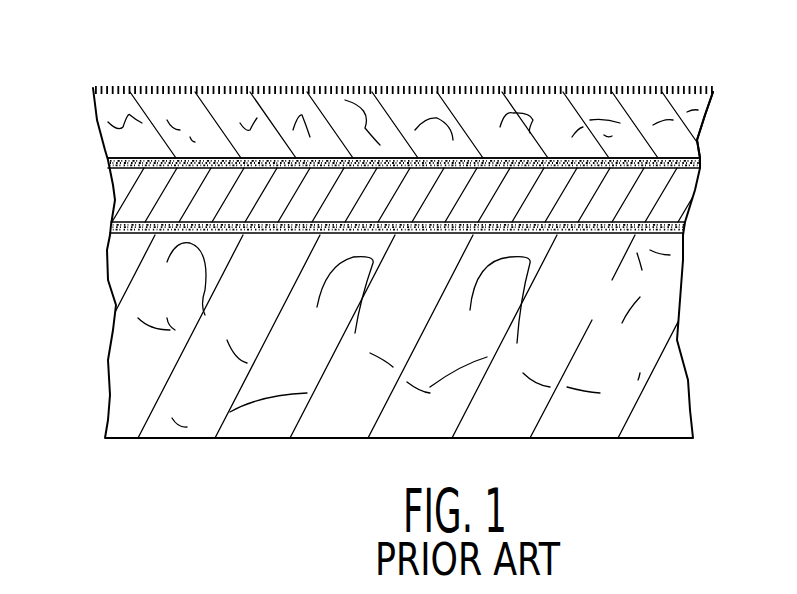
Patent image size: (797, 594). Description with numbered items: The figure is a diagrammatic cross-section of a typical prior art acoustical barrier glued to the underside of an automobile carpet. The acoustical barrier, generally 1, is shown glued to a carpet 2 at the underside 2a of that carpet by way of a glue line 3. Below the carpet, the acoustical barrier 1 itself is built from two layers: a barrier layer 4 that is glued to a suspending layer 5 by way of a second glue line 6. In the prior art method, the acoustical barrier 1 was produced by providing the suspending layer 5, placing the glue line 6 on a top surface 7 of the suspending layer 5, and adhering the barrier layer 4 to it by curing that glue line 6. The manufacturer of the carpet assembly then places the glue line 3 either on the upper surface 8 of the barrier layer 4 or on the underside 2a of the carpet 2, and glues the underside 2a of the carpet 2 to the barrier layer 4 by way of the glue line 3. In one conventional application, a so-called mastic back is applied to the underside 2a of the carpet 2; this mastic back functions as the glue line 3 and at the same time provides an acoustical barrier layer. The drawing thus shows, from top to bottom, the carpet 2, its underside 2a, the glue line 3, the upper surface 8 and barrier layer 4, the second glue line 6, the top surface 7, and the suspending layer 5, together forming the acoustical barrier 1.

The acoustical barrier 1 is at (713, 148).
The carpet 2 is at (655, 110).
The underside of carpet 2a is at (675, 153).
The glue line 3 is at (108, 163).
The barrier layer 4 is at (115, 200).
The suspending layer 5 is at (108, 365).
The second glue line 6 is at (110, 228).
The top surface of suspending layer 7 is at (562, 233).
The upper surface of barrier layer 8 is at (480, 158).